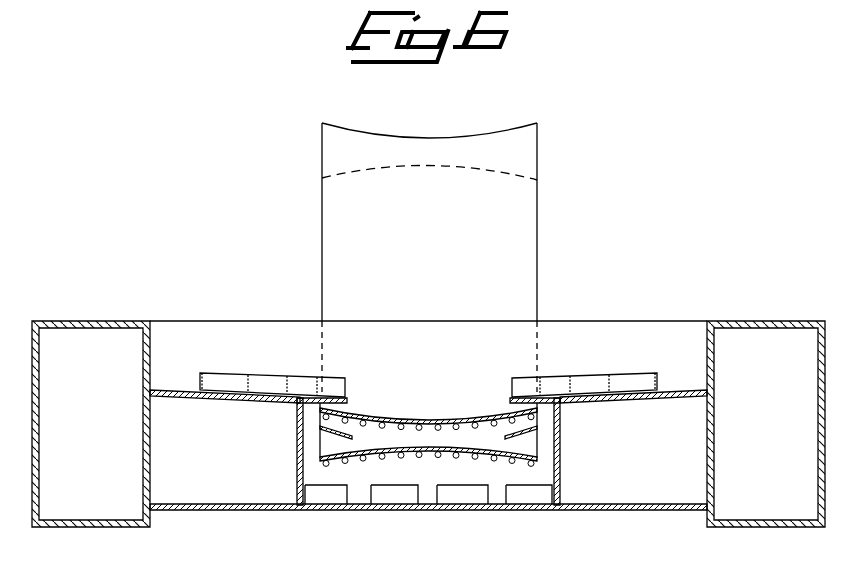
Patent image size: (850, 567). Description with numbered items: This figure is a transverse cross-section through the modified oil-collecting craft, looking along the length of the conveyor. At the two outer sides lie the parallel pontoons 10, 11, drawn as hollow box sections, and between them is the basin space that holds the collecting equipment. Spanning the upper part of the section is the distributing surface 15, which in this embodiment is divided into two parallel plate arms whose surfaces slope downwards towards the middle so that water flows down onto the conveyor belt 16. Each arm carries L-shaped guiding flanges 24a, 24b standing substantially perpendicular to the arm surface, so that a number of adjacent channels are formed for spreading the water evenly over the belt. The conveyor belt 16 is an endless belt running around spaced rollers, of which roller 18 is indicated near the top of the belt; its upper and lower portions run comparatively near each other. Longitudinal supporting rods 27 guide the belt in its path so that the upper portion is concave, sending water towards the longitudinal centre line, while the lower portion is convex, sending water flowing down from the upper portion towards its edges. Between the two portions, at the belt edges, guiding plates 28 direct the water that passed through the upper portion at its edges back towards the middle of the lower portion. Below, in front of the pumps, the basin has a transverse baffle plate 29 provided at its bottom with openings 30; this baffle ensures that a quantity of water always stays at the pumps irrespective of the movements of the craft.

The pontoon 10 is at (88, 330).
The pontoon 11 is at (758, 324).
The distributing surface 15 is at (182, 393).
The conveyor belt 16 is at (332, 223).
The roller 18 is at (520, 158).
The L-shaped guiding flange 24a is at (257, 380).
The L-shaped guiding flange 24b is at (607, 380).
The longitudinal supporting rod 27 is at (320, 409).
The guiding plate 28 is at (338, 434).
The transverse baffle plate 29 is at (360, 493).
The opening 30 is at (522, 498).